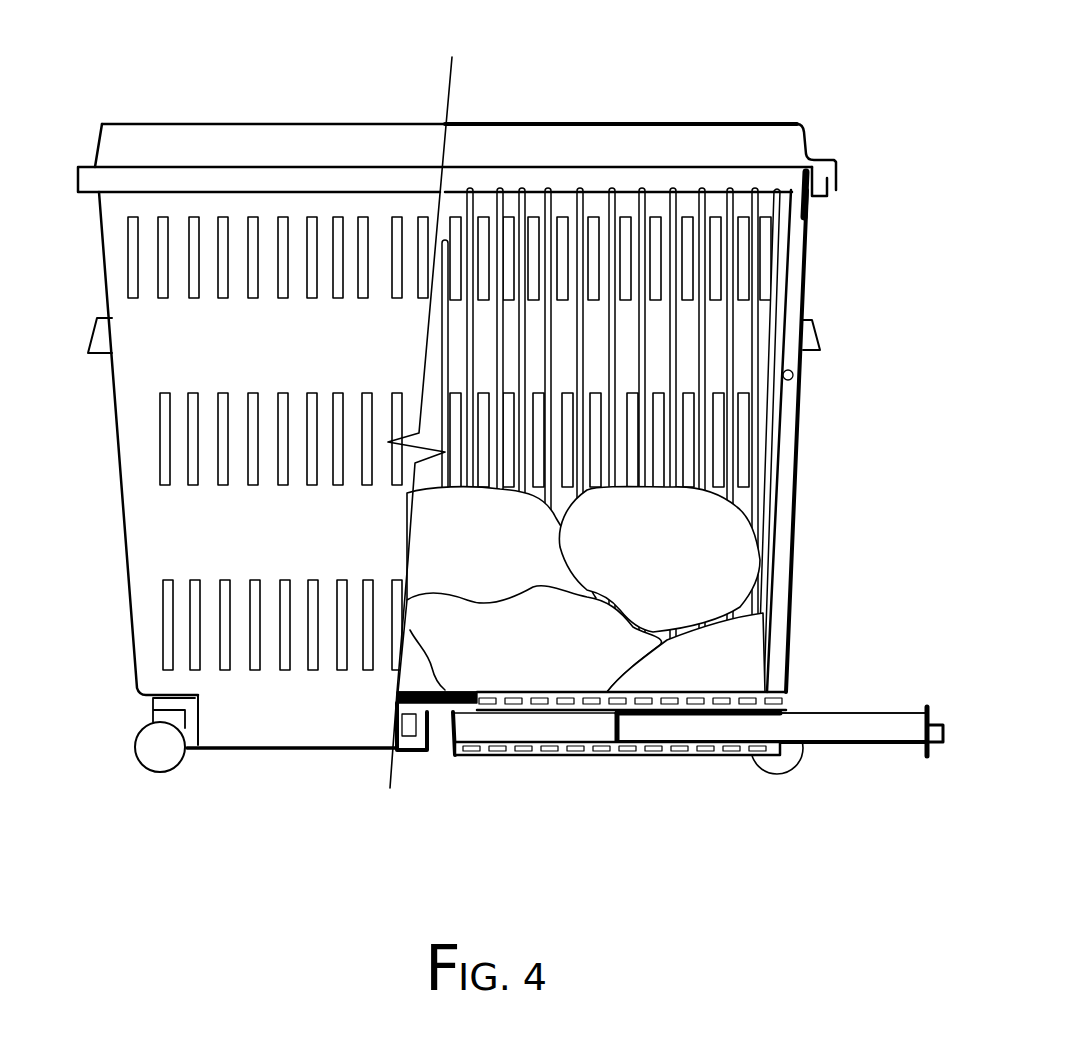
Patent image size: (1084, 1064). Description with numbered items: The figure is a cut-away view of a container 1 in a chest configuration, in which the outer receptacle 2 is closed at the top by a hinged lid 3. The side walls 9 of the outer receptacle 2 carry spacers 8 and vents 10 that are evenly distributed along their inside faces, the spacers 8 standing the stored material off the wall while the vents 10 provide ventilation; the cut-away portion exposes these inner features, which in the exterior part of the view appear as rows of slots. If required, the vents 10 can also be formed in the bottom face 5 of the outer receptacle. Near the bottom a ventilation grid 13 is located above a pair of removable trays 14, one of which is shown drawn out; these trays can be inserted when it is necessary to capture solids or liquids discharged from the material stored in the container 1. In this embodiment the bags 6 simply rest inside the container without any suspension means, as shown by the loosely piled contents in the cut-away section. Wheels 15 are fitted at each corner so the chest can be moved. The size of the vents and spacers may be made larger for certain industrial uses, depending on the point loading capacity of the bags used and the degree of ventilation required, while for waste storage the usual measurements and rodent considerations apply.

The container 1 is at (146, 213).
The outer receptacle 2 is at (308, 718).
The hinged lid 3 is at (252, 148).
The bottom face 5 is at (610, 760).
The bags 6 is at (727, 582).
The spacers 8 is at (490, 192).
The side walls 9 is at (800, 380).
The vents 10 is at (596, 237).
The ventilation grid 13 is at (723, 712).
The removable trays 14 is at (828, 725).
The wheels 15 is at (160, 745).